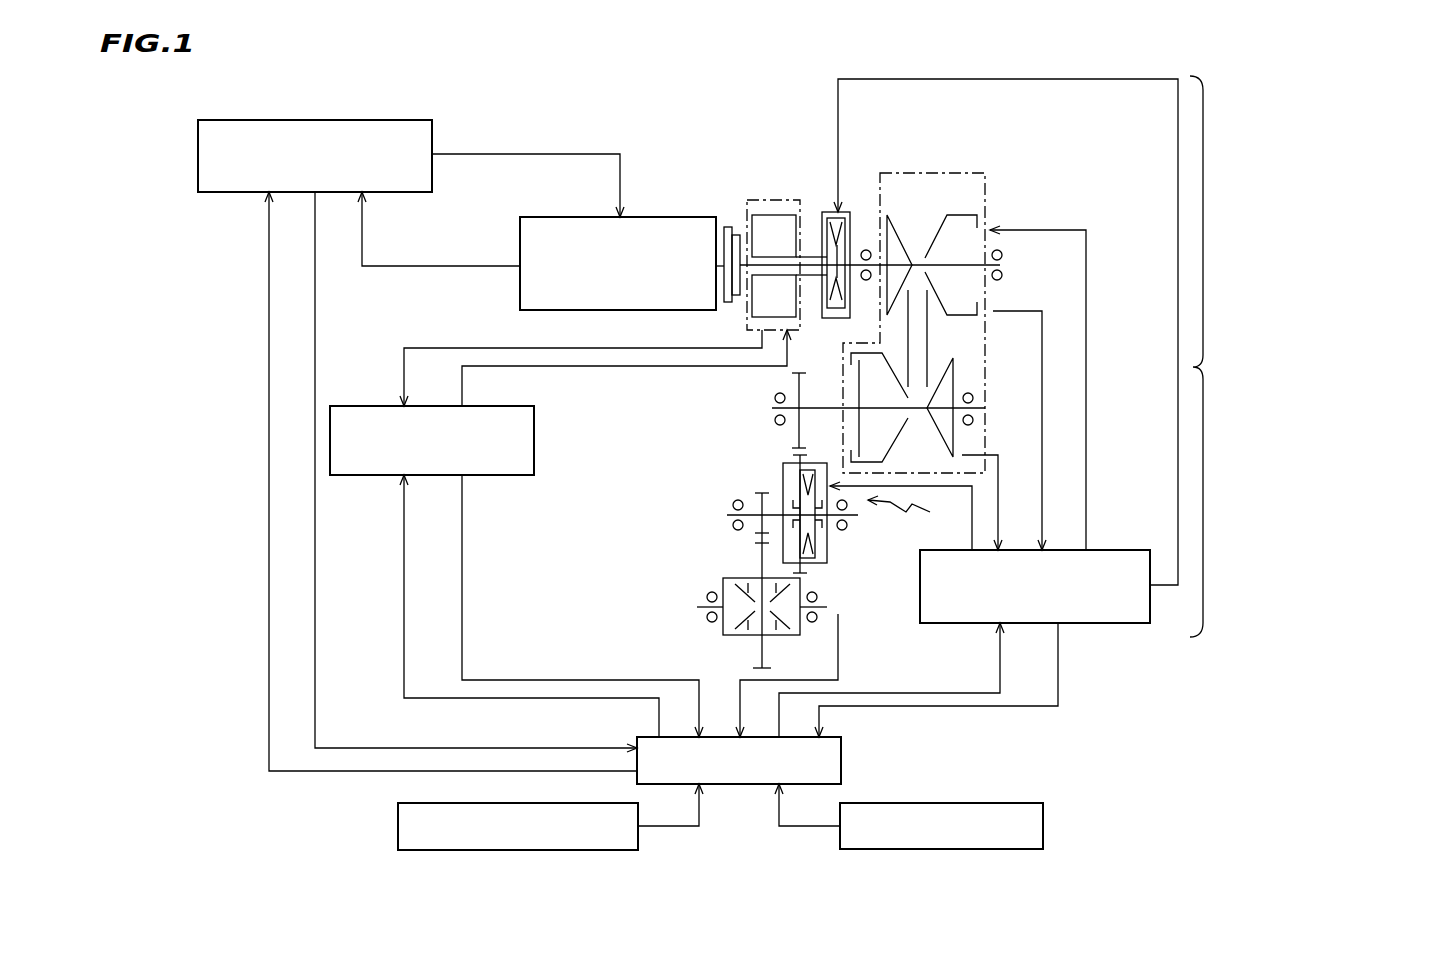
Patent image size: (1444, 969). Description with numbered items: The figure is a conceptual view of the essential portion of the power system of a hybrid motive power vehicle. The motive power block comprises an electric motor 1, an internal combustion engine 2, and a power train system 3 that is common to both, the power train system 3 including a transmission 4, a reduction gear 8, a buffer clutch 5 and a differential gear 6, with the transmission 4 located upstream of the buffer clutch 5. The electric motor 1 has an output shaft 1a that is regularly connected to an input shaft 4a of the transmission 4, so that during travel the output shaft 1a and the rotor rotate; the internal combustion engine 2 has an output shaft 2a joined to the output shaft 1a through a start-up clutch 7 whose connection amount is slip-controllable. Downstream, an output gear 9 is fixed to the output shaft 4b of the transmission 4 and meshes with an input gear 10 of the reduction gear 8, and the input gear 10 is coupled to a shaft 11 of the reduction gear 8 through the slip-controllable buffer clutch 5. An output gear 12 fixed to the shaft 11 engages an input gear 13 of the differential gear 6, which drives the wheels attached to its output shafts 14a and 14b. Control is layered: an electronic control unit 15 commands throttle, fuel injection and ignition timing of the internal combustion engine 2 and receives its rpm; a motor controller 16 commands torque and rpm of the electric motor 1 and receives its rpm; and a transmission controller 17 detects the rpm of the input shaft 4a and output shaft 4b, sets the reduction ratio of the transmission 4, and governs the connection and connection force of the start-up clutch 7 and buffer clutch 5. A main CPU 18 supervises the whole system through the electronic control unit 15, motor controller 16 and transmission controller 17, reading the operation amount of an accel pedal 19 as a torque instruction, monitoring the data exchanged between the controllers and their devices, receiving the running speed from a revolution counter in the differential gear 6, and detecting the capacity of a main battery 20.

The electric motor 1 is at (750, 216).
The output shaft 1a is at (807, 282).
The internal combustion engine 2 is at (520, 296).
The output shaft 2a is at (752, 300).
The power train system 3 is at (1313, 356).
The transmission 4 is at (985, 172).
The input shaft 4a is at (860, 248).
The output shaft 4b is at (822, 405).
The buffer clutch 5 is at (783, 472).
The differential gear 6 is at (725, 580).
The start-up clutch 7 is at (830, 212).
The reduction gear 8 is at (899, 514).
The output gear 9 is at (785, 432).
The input gear 10 is at (805, 568).
The shaft 11 is at (770, 508).
The output gear 12 is at (757, 535).
The input gear 13 is at (762, 655).
The output shaft 14a is at (697, 607).
The output shaft 14b is at (830, 607).
The electronic control unit 15 is at (393, 120).
The motor controller 16 is at (365, 405).
The transmission controller 17 is at (1105, 623).
The main CPU 18 is at (841, 760).
The accel pedal 19 is at (1043, 826).
The main battery 20 is at (398, 826).